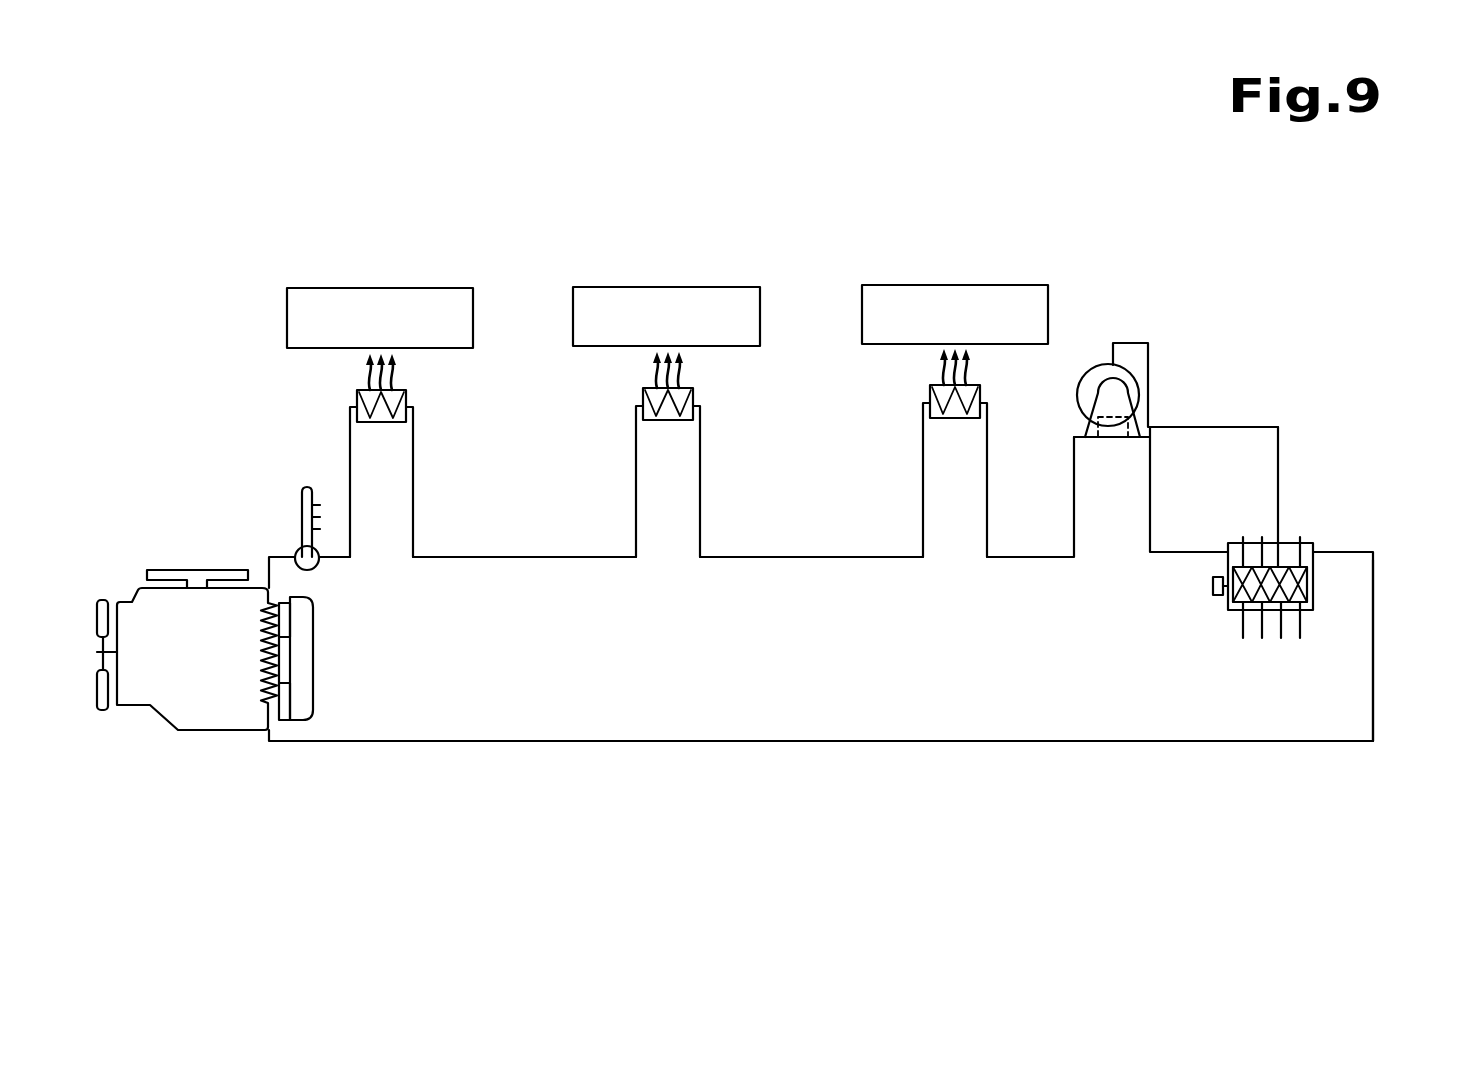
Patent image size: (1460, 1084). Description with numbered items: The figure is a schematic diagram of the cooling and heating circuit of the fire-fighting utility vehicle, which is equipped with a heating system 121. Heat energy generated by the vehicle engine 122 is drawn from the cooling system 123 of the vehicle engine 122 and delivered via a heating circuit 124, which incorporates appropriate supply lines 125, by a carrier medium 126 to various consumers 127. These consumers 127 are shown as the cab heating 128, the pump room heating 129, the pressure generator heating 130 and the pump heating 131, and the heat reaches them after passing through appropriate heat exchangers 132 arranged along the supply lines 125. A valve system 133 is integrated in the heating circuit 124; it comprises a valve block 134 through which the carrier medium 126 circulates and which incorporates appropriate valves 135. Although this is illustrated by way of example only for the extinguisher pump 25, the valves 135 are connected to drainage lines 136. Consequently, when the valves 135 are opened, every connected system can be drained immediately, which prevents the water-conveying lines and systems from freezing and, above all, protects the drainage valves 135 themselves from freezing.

The extinguisher pump 25 is at (1133, 373).
The heating system 121 is at (236, 312).
The vehicle engine 122 is at (203, 712).
The cooling system 123 is at (253, 672).
The heating circuit 124 is at (505, 515).
The supply lines 125 is at (812, 553).
The carrier medium 126 is at (1063, 742).
The consumers 127 is at (707, 240).
The cab heating 128 is at (381, 308).
The pump room heating 129 is at (663, 307).
The pressure generator heating 130 is at (956, 307).
The pump heating 131 is at (1115, 437).
The heat exchangers 132 is at (384, 445).
The valve system 133 is at (1306, 665).
The valve block 134 is at (1288, 553).
The valves 135 is at (1240, 597).
The drainage lines 136 is at (1288, 454).